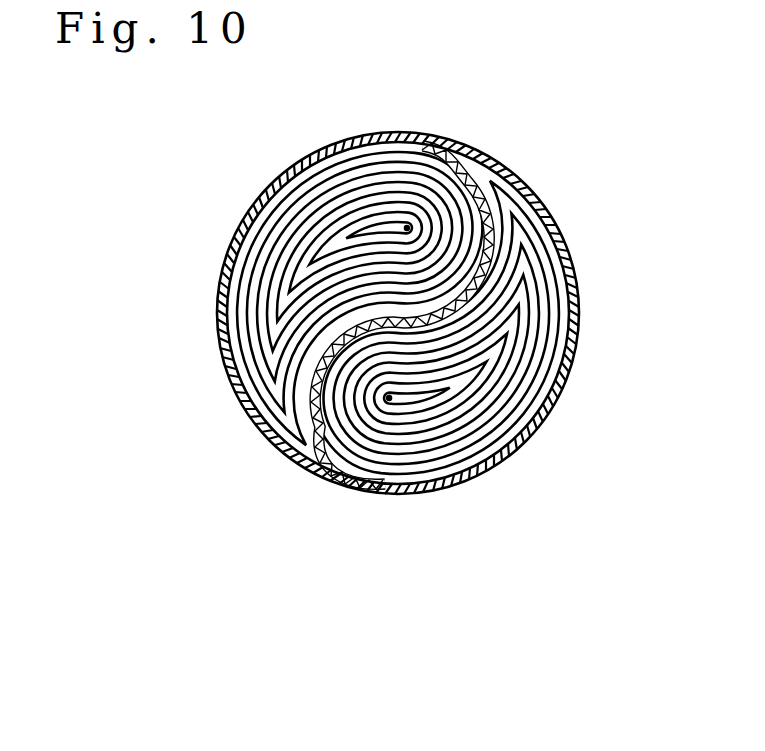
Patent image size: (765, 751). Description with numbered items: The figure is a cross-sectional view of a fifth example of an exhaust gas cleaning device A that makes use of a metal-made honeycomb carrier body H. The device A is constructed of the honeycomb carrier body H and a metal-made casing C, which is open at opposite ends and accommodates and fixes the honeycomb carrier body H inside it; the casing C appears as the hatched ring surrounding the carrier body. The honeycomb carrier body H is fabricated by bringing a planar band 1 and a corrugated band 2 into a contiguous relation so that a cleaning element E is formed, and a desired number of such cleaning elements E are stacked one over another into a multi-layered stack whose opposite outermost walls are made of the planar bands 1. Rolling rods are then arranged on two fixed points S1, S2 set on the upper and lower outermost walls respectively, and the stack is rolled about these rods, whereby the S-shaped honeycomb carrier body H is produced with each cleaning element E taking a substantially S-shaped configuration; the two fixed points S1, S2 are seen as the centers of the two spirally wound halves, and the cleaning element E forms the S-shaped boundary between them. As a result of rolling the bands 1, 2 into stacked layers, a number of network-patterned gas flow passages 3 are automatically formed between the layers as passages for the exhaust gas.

The exhaust gas cleaning device A is at (206, 230).
The casing C is at (560, 240).
The honeycomb carrier body H is at (537, 312).
The cleaning element E is at (322, 470).
The fixed point S1 is at (407, 228).
The fixed point S2 is at (389, 398).
The planar band 1 is at (379, 491).
The corrugated band 2 is at (402, 490).
The gas flow passages 3 is at (425, 489).